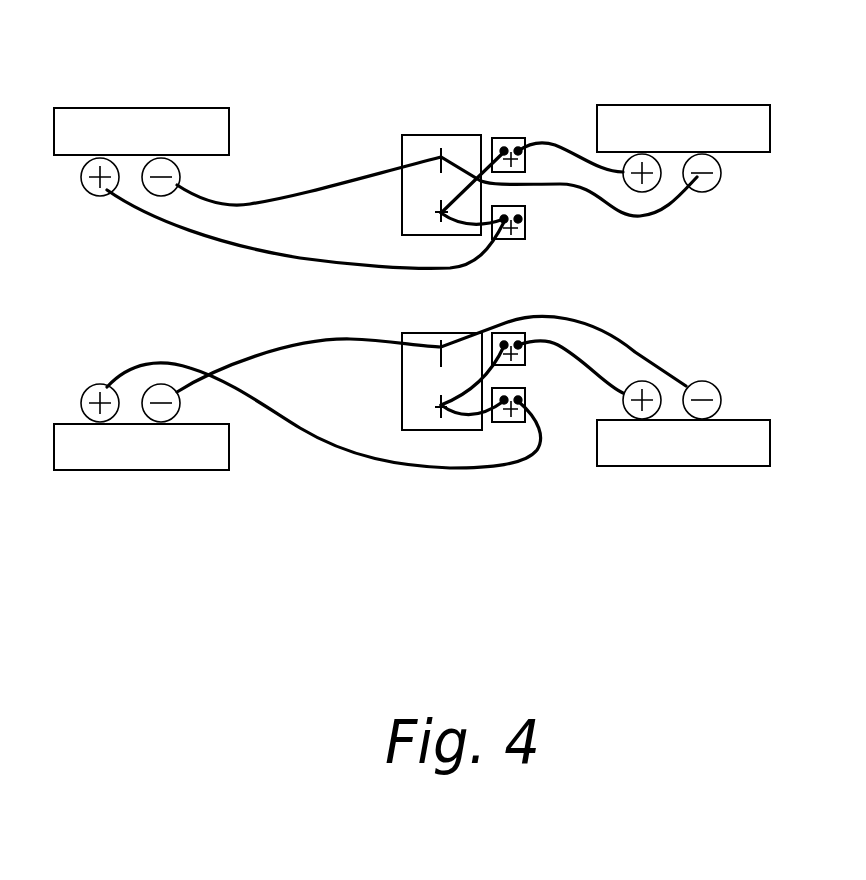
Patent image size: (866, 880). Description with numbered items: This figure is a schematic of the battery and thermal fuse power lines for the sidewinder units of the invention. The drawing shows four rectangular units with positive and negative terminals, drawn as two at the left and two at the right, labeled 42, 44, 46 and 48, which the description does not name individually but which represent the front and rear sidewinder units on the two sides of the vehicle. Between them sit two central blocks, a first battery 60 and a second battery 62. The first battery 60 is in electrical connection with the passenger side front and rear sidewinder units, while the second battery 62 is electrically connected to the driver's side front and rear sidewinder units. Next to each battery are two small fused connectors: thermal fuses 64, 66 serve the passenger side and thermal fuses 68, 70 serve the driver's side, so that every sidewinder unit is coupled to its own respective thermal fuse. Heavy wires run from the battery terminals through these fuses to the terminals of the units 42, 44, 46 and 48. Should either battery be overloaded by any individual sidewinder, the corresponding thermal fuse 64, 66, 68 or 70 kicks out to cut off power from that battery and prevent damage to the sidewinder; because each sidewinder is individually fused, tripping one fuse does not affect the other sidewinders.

The first battery 42 is at (120, 127).
The second battery 44 is at (120, 450).
The third battery 46 is at (697, 127).
The fourth battery 48 is at (713, 447).
The first battery 60 is at (441, 135).
The second battery 62 is at (462, 430).
The thermal fuse 64 is at (507, 138).
The thermal fuse 66 is at (527, 223).
The thermal fuse 68 is at (523, 333).
The thermal fuse 70 is at (516, 420).